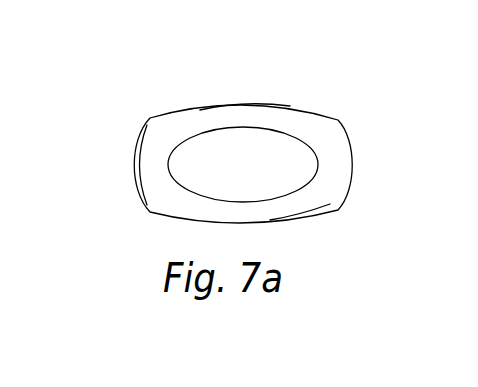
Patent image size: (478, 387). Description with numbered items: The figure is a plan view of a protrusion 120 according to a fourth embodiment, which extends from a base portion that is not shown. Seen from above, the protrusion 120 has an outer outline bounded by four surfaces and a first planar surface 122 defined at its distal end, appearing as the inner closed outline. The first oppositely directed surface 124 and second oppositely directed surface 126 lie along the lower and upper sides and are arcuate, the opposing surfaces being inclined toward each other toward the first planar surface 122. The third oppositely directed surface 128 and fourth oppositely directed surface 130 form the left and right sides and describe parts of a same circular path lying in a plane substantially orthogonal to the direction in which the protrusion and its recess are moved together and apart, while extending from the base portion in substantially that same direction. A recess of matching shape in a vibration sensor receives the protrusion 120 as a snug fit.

The protrusion 120 is at (315, 74).
The first planar surface 122 is at (290, 147).
The first oppositely directed surface 124 is at (302, 202).
The second oppositely directed surface 126 is at (207, 118).
The third oppositely directed surface 128 is at (132, 177).
The fourth oppositely directed surface 130 is at (352, 152).